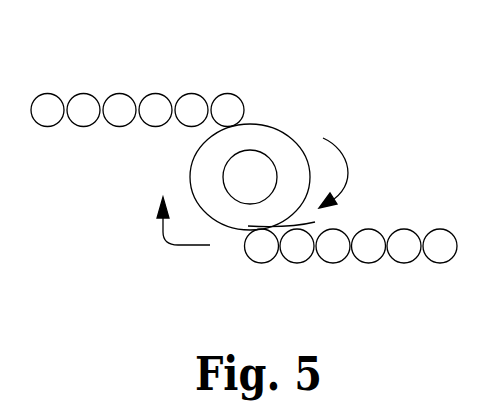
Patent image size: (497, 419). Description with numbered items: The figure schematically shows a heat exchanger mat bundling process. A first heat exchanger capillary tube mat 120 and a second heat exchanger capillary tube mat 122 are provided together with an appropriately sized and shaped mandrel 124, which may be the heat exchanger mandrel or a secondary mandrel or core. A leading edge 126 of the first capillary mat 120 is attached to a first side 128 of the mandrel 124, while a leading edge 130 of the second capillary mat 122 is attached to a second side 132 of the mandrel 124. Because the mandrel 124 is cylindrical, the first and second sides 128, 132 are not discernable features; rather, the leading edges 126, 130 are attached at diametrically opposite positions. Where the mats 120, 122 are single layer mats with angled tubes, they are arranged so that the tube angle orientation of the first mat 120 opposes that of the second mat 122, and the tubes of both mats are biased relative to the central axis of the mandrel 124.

The first heat exchanger capillary tube mat 120 is at (118, 93).
The second heat exchanger capillary tube mat 122 is at (333, 267).
The mandrel 124 is at (286, 130).
The leading edge of the first capillary mat 126 is at (244, 123).
The first side of the mandrel 128 is at (243, 121).
The leading edge of the second capillary mat 130 is at (248, 226).
The second side of the mandrel 132 is at (315, 222).